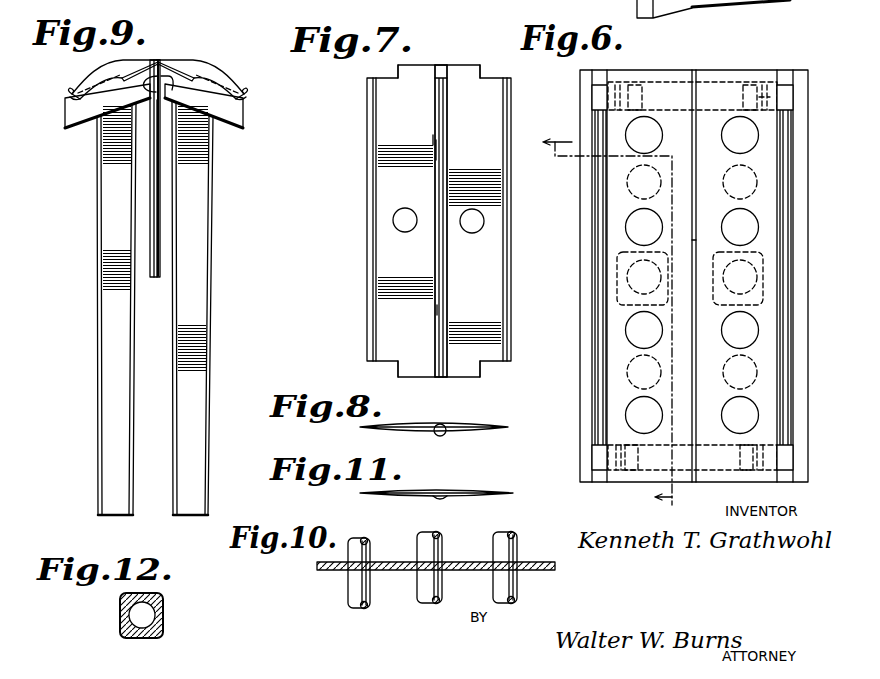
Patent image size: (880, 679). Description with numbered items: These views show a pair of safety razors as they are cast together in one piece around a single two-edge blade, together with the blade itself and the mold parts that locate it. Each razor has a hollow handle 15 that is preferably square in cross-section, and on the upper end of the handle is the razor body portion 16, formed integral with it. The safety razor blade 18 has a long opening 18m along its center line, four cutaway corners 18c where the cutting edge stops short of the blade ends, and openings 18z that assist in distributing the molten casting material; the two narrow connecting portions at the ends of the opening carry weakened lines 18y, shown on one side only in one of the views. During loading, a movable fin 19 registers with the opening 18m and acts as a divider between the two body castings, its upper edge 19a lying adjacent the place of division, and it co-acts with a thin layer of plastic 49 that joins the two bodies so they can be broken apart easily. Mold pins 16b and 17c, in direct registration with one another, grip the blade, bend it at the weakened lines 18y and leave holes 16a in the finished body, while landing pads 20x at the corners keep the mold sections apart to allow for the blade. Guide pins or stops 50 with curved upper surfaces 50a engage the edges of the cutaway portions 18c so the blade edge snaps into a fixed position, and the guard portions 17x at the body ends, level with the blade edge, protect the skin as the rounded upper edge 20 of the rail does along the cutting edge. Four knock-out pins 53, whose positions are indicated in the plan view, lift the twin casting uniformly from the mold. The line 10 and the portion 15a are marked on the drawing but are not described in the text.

In FIG. 6, the section line 10- 10 is at (627, 314).
In FIG. 9, the handle 15 is at (100, 277).
In FIG. 6, the handle 15 is at (692, 255).
In FIG. 12, the handle 15 is at (165, 613).
In FIG. 6, the rack leg mounting recess 15a is at (720, 295).
In FIG. 9, the razor body portion 16 is at (65, 128).
In FIG. 6, the holes 16a is at (728, 135).
In FIG. 10, the pins 16b is at (368, 556).
In FIG. 10, the pins 17c is at (370, 590).
In FIG. 9, the guard portions 17x is at (72, 91).
In FIG. 9, the safety razor blade 18 is at (122, 64).
In FIG. 7, the safety razor blade 18 is at (490, 172).
In FIG. 6, the safety razor blade 18 is at (597, 126).
In FIG. 8, the safety razor blade 18 is at (405, 424).
In FIG. 11, the safety razor blade 18 is at (418, 490).
In FIG. 10, the safety razor blade 18 is at (535, 562).
In FIG. 7, the cutaway corners 18c is at (397, 70).
In FIG. 9, the long opening 18m is at (170, 88).
In FIG. 7, the long opening 18m is at (434, 140).
In FIG. 7, the weakened lines 18y is at (441, 64).
In FIG. 8, the weakened lines 18y is at (442, 426).
In FIG. 11, the weakened lines 18y is at (444, 494).
In FIG. 7, the openings 18z is at (405, 210).
In FIG. 9, the fin 19 is at (157, 278).
In FIG. 7, the fin 19 is at (447, 172).
In FIG. 9, the upper edge of fin 19a is at (175, 64).
In FIG. 7, the upper edge of fin 19a is at (440, 150).
In FIG. 9, the upper edge of rail 20 is at (65, 106).
In FIG. 6, the landing pads 20x is at (592, 97).
In FIG. 9, the thin layer of plastic 49 is at (158, 61).
In FIG. 6, the guide pins 50 is at (618, 92).
In FIG. 6, the curved upper surface 50a is at (640, 96).
In FIG. 6, the knock-out pins 53 is at (730, 182).